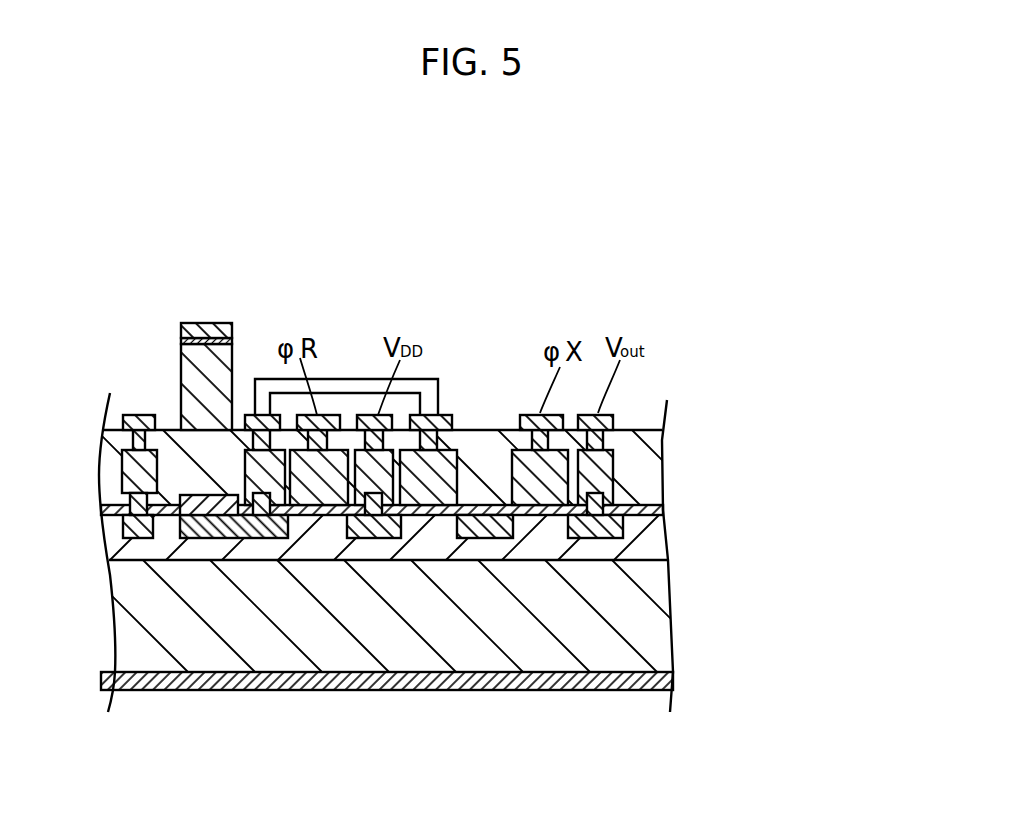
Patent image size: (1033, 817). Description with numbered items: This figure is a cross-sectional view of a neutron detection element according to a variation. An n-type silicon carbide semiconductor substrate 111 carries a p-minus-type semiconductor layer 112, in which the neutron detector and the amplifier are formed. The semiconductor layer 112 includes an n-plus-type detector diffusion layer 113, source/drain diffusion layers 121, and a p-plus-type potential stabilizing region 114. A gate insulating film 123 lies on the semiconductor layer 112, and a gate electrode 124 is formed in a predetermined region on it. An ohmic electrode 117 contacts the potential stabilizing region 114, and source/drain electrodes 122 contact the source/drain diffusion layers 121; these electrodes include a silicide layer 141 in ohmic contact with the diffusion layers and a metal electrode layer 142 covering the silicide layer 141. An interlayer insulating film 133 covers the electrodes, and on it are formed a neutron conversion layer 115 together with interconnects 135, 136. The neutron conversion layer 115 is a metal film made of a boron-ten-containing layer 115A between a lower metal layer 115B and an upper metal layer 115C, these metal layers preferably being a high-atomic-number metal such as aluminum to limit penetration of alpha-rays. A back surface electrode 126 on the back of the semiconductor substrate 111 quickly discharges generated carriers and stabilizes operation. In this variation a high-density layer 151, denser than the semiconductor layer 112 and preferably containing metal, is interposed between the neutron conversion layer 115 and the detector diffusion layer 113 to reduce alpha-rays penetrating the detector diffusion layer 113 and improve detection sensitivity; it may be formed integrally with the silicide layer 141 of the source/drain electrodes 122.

The semiconductor substrate 111 is at (672, 625).
The semiconductor layer 112 is at (667, 543).
The detector diffusion layer 113 is at (238, 538).
The potential stabilizing region 114 is at (133, 538).
The neutron conversion layer 115 is at (314, 325).
The 10B-containing layer 115A is at (233, 341).
The lower metal layer 115B is at (237, 353).
The upper metal layer 115C is at (235, 328).
The ohmic electrode 117 is at (154, 466).
The source/drain diffusion layers 121 is at (373, 537).
The source/drain electrodes 122 is at (688, 429).
The gate insulating film 123 is at (665, 512).
The gate electrode 124 is at (340, 448).
The back surface electrode 126 is at (673, 690).
The interlayer insulating film 133 is at (665, 440).
The interconnect 135 is at (450, 413).
The interconnect 136 is at (427, 379).
The silicide layer 141 is at (608, 505).
The metal electrode layer 142 is at (613, 468).
The high-density layer 151 is at (187, 538).